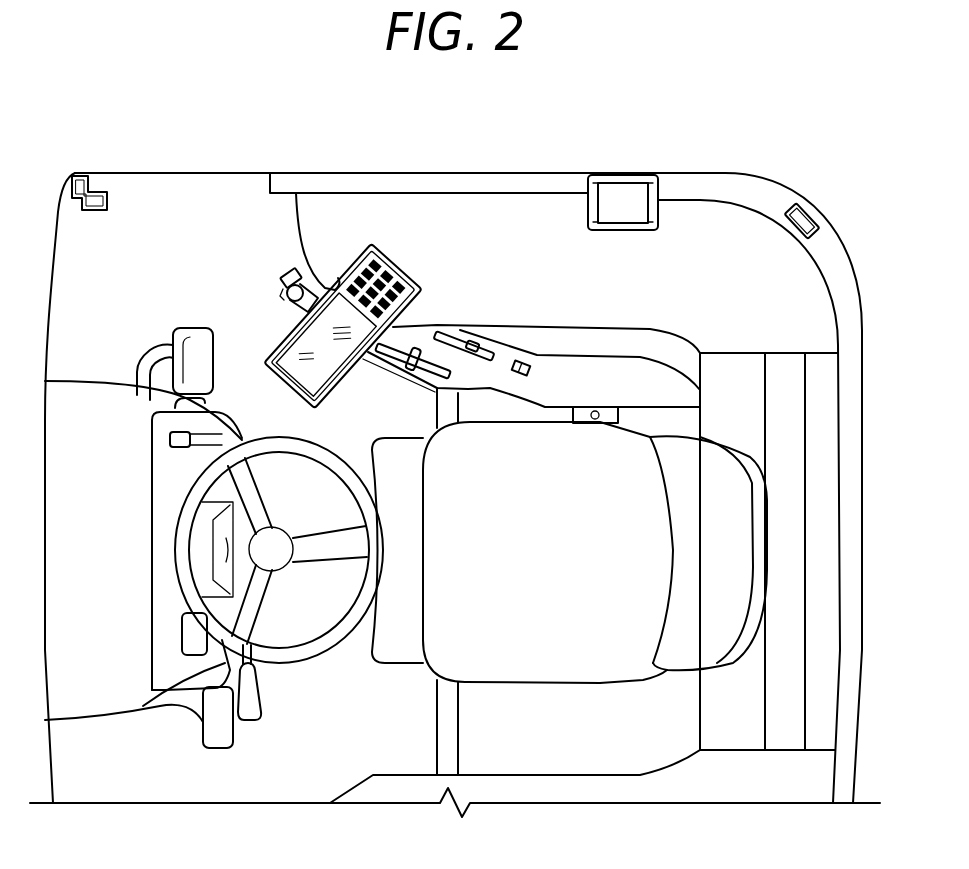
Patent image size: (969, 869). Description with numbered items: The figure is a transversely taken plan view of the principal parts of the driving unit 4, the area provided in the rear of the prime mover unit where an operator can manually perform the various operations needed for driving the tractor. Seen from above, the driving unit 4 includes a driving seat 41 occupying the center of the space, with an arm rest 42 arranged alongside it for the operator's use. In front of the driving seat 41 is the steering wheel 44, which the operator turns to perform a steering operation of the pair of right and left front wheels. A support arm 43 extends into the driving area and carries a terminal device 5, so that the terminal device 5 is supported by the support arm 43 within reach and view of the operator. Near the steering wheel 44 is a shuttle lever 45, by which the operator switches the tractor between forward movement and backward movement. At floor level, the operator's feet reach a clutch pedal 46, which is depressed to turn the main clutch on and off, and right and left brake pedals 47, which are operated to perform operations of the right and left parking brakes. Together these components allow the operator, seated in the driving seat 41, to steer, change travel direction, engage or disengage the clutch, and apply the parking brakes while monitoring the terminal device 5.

The driving unit 4 is at (835, 232).
The terminal device 5 is at (401, 266).
The driving seat 41 is at (550, 670).
The arm rest 42 is at (597, 364).
The support arm 43 is at (283, 284).
The steering wheel 44 is at (317, 653).
The shuttle lever 45 is at (254, 716).
The clutch pedal 46 is at (217, 748).
The right and left brake pedals 47 is at (205, 403).